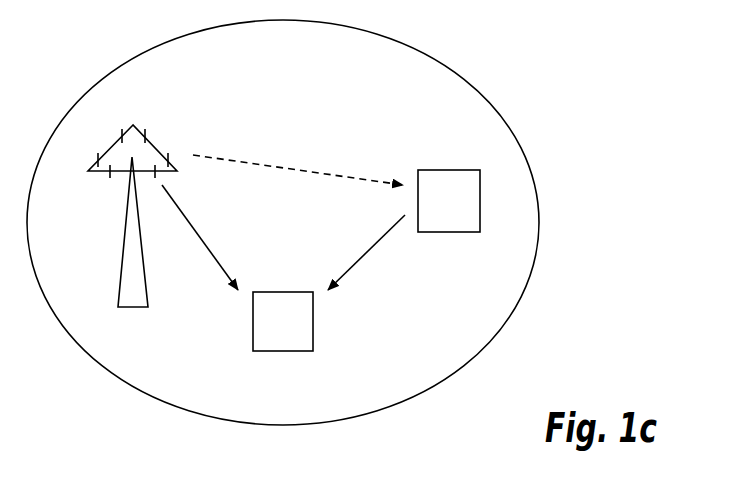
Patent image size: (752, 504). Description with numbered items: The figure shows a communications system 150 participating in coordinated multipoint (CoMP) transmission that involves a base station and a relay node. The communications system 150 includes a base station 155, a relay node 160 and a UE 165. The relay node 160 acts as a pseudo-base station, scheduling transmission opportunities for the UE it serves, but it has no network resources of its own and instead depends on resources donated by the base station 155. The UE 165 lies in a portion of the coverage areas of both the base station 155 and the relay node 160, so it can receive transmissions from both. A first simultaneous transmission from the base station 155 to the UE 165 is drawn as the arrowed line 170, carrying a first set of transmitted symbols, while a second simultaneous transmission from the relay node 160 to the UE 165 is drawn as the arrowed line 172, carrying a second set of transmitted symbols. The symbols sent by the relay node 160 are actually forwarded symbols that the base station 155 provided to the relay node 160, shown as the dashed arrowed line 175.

The communications system 150 is at (574, 20).
The base station 155 is at (122, 275).
The relay node 160 is at (448, 170).
The UE 165 is at (254, 333).
The arrowed line 170 is at (208, 251).
The arrowed line 172 is at (358, 258).
The dashed arrowed line 175 is at (296, 171).